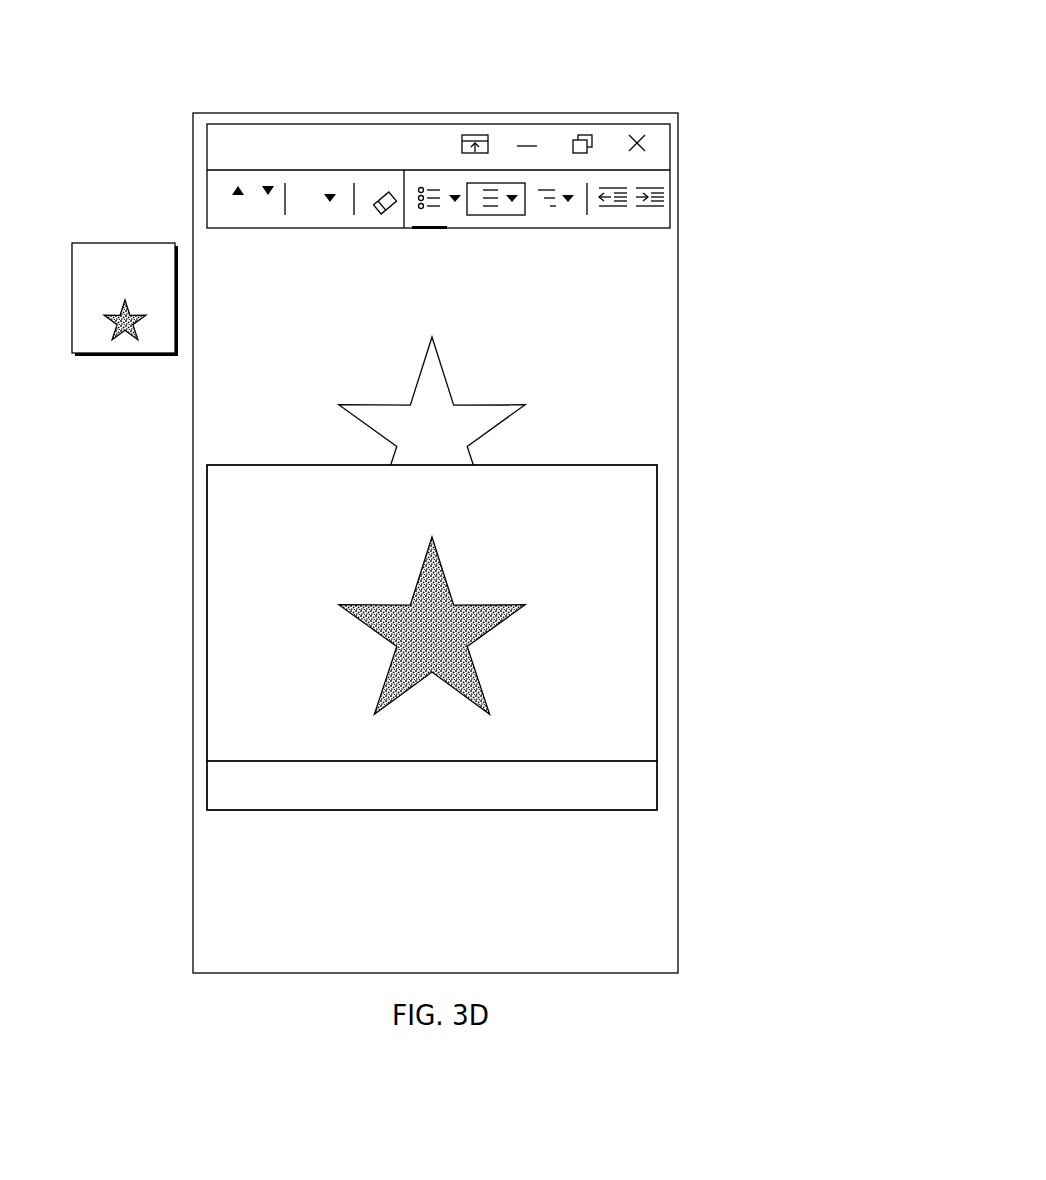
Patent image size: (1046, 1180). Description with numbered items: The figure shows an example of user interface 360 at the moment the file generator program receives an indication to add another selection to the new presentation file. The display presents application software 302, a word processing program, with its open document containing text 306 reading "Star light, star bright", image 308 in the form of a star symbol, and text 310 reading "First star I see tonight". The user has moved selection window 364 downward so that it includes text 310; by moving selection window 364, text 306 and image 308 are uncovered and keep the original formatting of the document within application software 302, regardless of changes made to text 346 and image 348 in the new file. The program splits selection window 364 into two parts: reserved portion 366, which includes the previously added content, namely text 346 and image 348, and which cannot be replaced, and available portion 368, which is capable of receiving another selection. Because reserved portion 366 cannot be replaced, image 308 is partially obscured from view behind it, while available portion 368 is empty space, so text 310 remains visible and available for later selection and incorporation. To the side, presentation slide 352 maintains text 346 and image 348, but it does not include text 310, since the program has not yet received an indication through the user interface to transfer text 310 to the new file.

The user interface 360 is at (608, 46).
The application software 302 is at (603, 113).
The text 306 is at (552, 303).
The image 308 is at (443, 371).
The text 346 is at (553, 498).
The image 348 is at (480, 681).
The presentation slide 352 is at (158, 243).
The selection window 364 is at (690, 463).
The reserved portion 366 is at (657, 608).
The available portion 368 is at (657, 786).
The text 310 is at (533, 791).